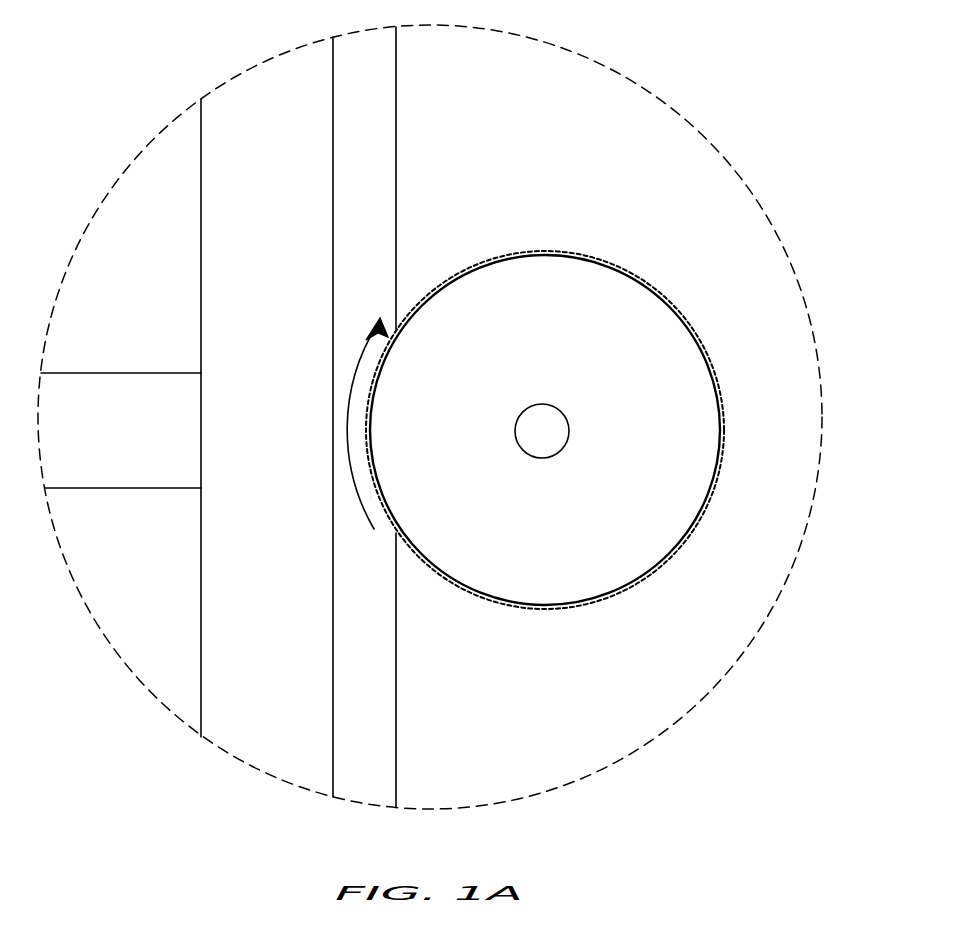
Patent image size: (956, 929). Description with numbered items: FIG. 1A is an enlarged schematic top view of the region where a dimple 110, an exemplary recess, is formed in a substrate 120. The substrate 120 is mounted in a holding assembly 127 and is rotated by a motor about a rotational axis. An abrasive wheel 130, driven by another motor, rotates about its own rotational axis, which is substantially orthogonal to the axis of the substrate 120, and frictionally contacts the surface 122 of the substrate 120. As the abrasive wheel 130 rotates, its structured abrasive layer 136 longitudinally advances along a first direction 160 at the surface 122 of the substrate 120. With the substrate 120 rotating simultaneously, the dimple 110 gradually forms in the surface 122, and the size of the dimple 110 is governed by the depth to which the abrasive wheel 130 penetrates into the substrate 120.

The dimple 110 is at (370, 487).
The substrate 120 is at (397, 720).
The surface 122 is at (382, 667).
The holding assembly 127 is at (201, 614).
The abrasive wheel 130 is at (712, 360).
The structured abrasive layer 136 is at (677, 311).
The first direction 160 is at (358, 362).